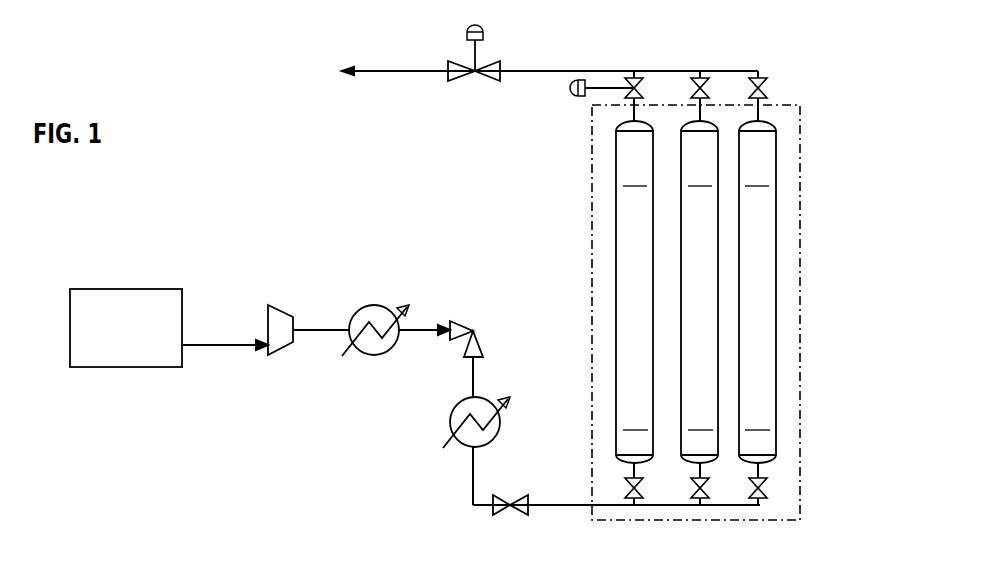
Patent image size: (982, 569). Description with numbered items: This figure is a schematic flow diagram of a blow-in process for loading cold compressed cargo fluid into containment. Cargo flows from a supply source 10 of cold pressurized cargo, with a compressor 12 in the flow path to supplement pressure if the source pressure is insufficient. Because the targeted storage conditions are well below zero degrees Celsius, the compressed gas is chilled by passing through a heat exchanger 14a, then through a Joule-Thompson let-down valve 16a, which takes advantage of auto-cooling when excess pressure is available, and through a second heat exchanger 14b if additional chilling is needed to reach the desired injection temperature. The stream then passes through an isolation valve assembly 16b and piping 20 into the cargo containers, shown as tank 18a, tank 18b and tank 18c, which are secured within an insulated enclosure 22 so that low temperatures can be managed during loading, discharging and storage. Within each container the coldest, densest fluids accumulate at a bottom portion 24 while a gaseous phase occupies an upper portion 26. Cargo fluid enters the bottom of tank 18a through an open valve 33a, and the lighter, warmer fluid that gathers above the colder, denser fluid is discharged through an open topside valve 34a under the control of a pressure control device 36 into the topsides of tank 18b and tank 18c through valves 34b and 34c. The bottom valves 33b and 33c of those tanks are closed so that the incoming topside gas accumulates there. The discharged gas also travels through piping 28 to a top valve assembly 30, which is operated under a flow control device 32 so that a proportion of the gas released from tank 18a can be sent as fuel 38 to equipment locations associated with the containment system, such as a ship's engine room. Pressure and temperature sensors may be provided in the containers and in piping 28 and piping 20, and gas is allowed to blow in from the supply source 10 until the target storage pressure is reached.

The supply source 10 is at (138, 341).
The compressor 12 is at (278, 305).
The heat exchanger 14a is at (375, 305).
The heat exchanger 14b is at (502, 433).
The Joule-Thompson let-down valve 16a is at (483, 345).
The isolation valve assembly 16b is at (508, 508).
The tank 18a is at (617, 215).
The tank 18b is at (717, 256).
The tank 18c is at (775, 327).
The piping 20 is at (578, 508).
The insulated enclosure 22 is at (800, 397).
The bottom portion 24 is at (696, 419).
The upper portion 26 is at (696, 175).
The piping 28 is at (517, 70).
The top valve assembly 30 is at (448, 72).
The flow control device 32 is at (467, 32).
The valve 33a is at (627, 487).
The valve 33b is at (695, 498).
The valve 33c is at (763, 492).
The topside valve 34a is at (635, 87).
The valve 34b is at (705, 87).
The valve 34c is at (760, 82).
The pressure control device 36 is at (583, 93).
The fuel 38 is at (370, 72).